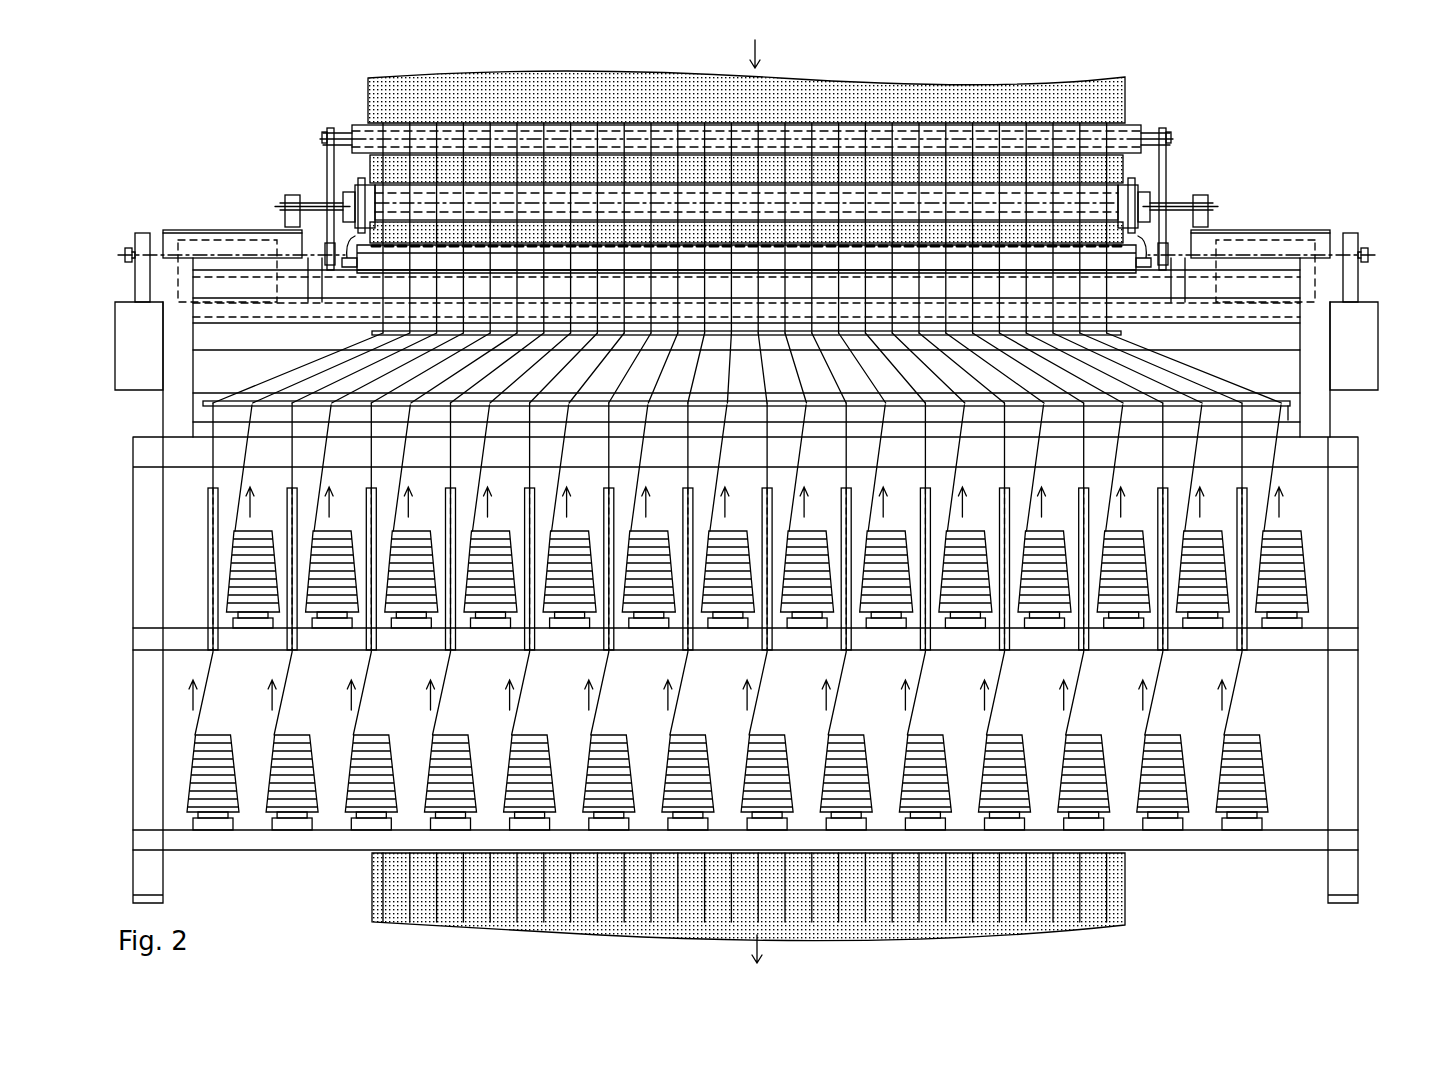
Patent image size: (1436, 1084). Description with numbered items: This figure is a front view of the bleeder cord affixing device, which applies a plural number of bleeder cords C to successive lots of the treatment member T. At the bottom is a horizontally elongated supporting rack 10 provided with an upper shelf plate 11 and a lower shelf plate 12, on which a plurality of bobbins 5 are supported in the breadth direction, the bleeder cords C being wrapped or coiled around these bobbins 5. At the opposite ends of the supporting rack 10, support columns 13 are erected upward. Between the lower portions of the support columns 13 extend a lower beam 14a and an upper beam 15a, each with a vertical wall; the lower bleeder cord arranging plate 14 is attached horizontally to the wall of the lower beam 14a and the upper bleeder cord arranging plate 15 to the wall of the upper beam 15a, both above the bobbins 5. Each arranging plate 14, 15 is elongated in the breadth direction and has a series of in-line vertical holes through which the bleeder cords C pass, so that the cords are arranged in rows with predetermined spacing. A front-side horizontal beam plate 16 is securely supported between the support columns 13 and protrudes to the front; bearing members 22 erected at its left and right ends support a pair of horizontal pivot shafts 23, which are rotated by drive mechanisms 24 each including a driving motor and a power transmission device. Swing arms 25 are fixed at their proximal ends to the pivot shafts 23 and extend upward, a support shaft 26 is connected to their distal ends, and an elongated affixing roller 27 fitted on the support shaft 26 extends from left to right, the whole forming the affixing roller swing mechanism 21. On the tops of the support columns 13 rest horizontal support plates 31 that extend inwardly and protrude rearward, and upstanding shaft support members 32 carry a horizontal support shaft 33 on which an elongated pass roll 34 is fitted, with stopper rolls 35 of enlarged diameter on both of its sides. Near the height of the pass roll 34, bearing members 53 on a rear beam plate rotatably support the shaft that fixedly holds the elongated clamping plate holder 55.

The bobbins 5 is at (267, 524).
The supporting rack 10 is at (1362, 662).
The upper shelf plate 11 is at (726, 655).
The lower shelf plate 12 is at (1190, 856).
The support columns 13 is at (209, 565).
The lower bleeder cord arranging plate 14 is at (1295, 400).
The lower beam 14a is at (1288, 410).
The upper bleeder cord arranging plate 15 is at (1120, 331).
The upper beam 15a is at (1218, 343).
The front-side horizontal beam plate 16 is at (1378, 304).
The affixing roller swing mechanism 21 is at (230, 138).
The bearing members 22 is at (132, 283).
The pivot shafts 23 is at (143, 245).
The drive mechanisms 24 is at (183, 236).
The swing arms 25 is at (348, 200).
The support shaft 26 is at (347, 140).
The affixing roller 27 is at (342, 126).
The horizontal support plates 31 is at (232, 228).
The shaft support members 32 is at (290, 195).
The horizontal support shaft 33 is at (330, 205).
The pass roll 34 is at (905, 190).
The stopper rolls 35 is at (328, 170).
The bearing members 53 is at (345, 258).
The clamping plate holder 55 is at (688, 262).
The treatment member T is at (380, 96).
The bleeder cords C is at (212, 476).